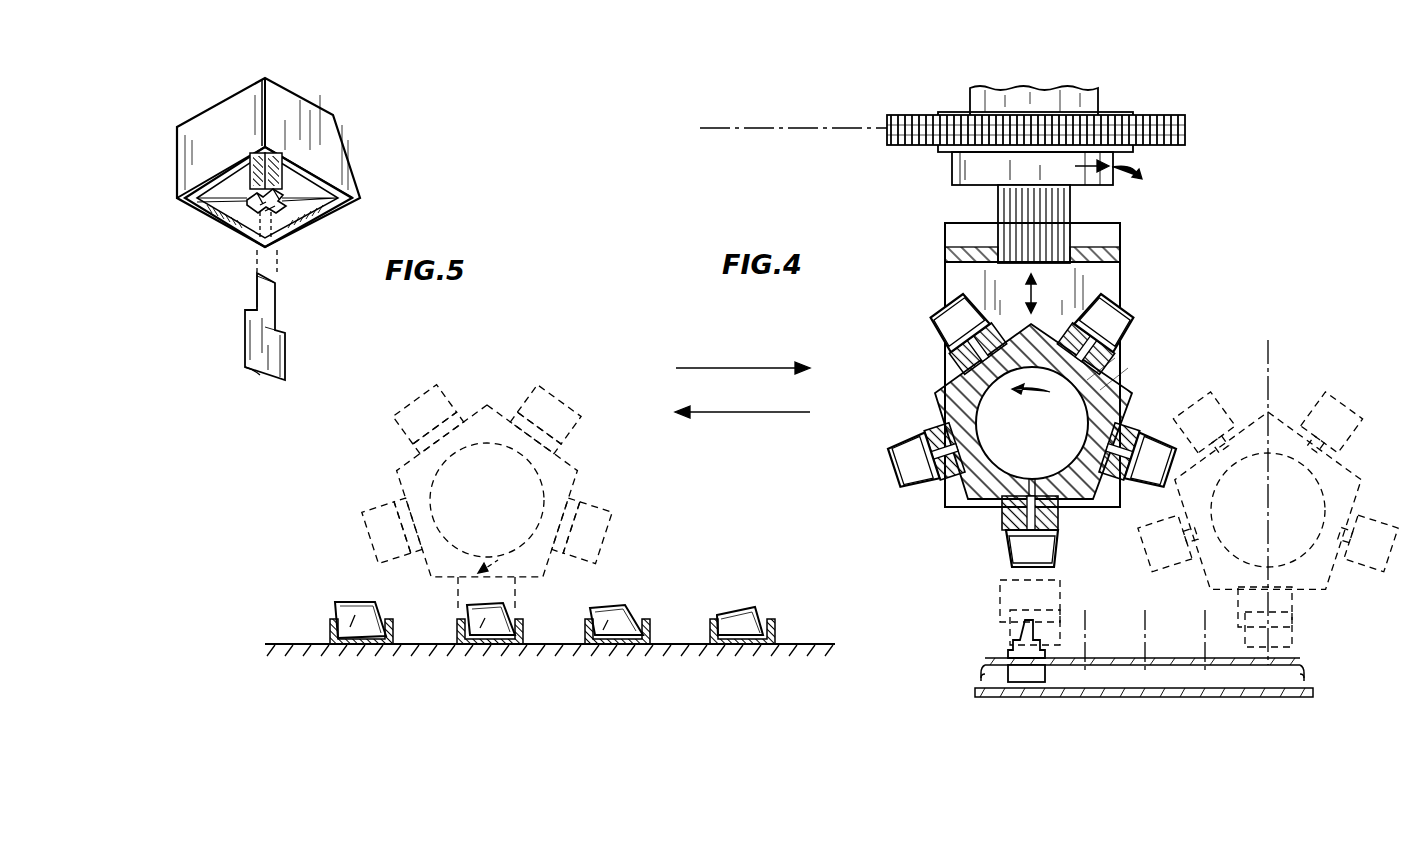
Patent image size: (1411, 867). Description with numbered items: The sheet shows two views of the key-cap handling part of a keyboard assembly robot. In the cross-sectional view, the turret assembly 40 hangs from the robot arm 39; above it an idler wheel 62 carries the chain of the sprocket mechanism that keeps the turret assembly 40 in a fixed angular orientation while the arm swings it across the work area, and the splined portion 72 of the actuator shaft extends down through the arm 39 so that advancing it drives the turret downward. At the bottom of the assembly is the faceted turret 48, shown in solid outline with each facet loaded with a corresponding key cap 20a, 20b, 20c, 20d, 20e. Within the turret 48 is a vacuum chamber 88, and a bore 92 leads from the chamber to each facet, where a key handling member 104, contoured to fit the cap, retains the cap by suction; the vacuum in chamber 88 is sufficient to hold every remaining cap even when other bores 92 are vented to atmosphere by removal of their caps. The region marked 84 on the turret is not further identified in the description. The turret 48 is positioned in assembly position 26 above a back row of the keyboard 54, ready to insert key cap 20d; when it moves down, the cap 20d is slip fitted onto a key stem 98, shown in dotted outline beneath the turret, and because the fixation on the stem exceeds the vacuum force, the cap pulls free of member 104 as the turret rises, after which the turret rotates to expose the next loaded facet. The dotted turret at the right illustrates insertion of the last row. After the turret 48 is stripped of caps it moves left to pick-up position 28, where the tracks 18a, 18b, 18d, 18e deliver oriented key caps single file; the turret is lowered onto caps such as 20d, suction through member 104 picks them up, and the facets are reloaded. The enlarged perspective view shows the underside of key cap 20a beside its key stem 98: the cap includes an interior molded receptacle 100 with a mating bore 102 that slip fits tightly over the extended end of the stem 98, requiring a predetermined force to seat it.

In FIG. 4, the track 18a is at (648, 620).
In FIG. 4, the track 18b is at (390, 620).
In FIG. 4, the track 18d is at (522, 620).
In FIG. 4, the track 18e is at (772, 630).
In FIG. 5, the key cap 20a is at (307, 105).
In FIG. 4, the key cap 20a is at (1108, 320).
In FIG. 4, the key cap 20b is at (945, 301).
In FIG. 4, the key cap 20c is at (900, 472).
In FIG. 4, the key cap 20d is at (1055, 553).
In FIG. 4, the key cap 20e is at (1165, 448).
In FIG. 4, the assembly position 26 is at (1078, 728).
In FIG. 4, the pick-up position 28 is at (432, 700).
In FIG. 4, the robot arm 39 is at (952, 165).
In FIG. 4, the turret assembly 40 is at (945, 252).
In FIG. 4, the turret 48 is at (1130, 392).
In FIG. 4, the keyboard 54 is at (1112, 666).
In FIG. 4, the idler wheel 62 is at (1108, 128).
In FIG. 4, the splined portion 72 is at (1052, 215).
In FIG. 4, the turret face 84 is at (1120, 378).
In FIG. 4, the chamber 88 is at (1038, 444).
In FIG. 4, the bore 92 is at (968, 352).
In FIG. 5, the key stem 98 is at (272, 313).
In FIG. 4, the key stem 98 is at (1040, 645).
In FIG. 5, the receptacle 100 is at (285, 178).
In FIG. 5, the mating bore 102 is at (290, 218).
In FIG. 4, the key handling member 104 is at (1062, 520).